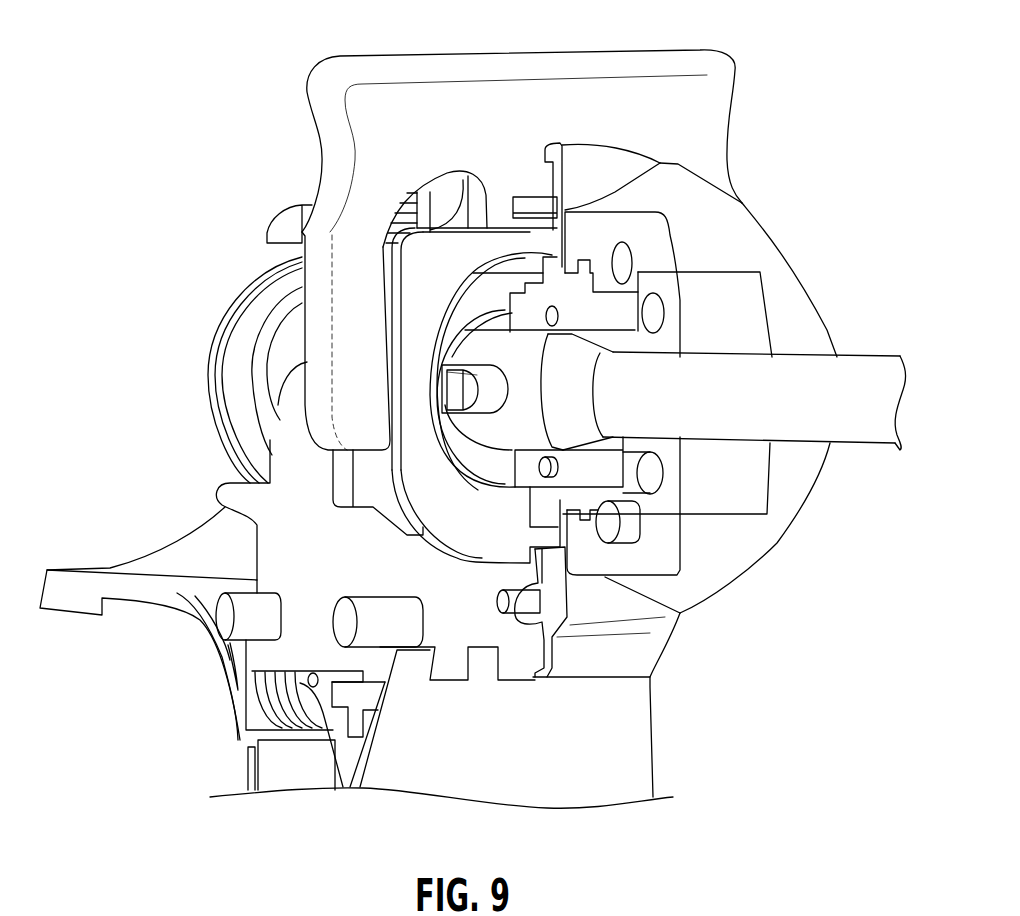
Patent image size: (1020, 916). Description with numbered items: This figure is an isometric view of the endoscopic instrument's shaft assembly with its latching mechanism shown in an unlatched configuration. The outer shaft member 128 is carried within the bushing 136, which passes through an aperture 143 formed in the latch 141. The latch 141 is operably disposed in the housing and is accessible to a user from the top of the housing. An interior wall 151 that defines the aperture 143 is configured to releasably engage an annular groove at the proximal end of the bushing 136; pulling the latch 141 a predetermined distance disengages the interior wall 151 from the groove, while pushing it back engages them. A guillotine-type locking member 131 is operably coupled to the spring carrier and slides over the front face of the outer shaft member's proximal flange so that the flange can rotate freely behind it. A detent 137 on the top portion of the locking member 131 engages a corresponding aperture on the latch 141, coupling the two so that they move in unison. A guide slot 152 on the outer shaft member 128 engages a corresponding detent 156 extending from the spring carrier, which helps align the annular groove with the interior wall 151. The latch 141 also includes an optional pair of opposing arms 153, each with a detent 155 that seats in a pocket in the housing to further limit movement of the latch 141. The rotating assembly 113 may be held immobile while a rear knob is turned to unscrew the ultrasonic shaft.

The rotating assembly 113 is at (830, 320).
The outer shaft member 128 is at (857, 430).
The locking member 131 is at (623, 647).
The bushing 136 is at (746, 297).
The detent 137 is at (533, 200).
The latch 141 is at (710, 93).
The aperture 143 is at (503, 492).
The interior wall 151 is at (462, 284).
The guide slot 152 is at (499, 385).
The opposing arms 153 is at (355, 266).
The detent 155 is at (390, 420).
The detent 156 is at (478, 397).